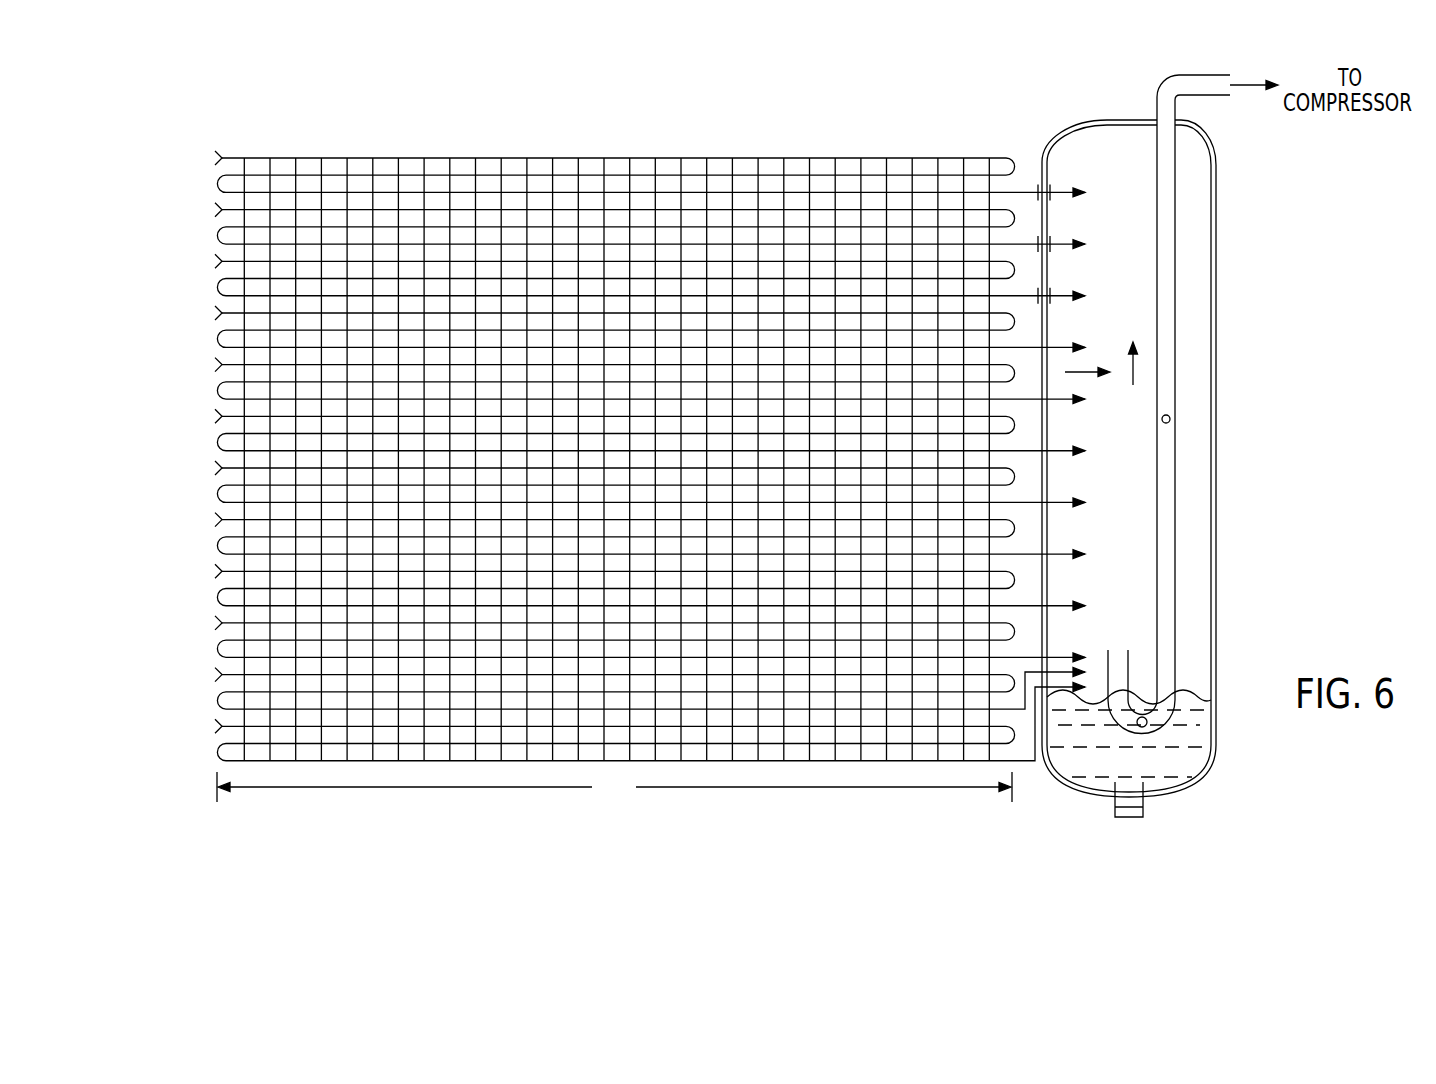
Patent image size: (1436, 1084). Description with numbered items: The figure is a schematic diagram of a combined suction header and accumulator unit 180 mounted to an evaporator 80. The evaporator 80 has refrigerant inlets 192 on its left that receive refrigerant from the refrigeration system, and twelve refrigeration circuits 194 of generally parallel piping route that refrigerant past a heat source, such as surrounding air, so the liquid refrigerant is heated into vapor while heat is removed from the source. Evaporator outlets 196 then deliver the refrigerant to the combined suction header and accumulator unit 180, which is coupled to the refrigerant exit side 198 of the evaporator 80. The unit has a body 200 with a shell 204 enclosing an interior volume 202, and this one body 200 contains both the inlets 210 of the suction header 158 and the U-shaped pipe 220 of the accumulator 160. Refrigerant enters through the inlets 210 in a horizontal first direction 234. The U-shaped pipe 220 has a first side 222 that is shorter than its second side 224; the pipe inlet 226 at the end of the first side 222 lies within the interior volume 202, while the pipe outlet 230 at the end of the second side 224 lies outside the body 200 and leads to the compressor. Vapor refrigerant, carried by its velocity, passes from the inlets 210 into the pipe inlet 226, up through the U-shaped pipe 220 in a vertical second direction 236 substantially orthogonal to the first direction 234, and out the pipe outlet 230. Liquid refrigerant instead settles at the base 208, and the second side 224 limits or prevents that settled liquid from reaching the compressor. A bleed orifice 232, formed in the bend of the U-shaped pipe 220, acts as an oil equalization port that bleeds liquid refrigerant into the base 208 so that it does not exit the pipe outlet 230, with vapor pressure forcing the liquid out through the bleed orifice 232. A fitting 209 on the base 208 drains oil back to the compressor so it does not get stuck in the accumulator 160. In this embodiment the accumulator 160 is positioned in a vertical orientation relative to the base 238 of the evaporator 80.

The evaporator 80 is at (370, 136).
The refrigerant inlets 192 is at (220, 262).
The refrigeration circuits 194 is at (257, 208).
The evaporator outlets 196 is at (1024, 188).
The refrigerant exit side 198 is at (1004, 154).
The inlets 210 is at (1050, 187).
The suction header 158 is at (1115, 235).
The interior volume 202 is at (1128, 290).
The accumulator 160 is at (1186, 269).
The body 200 is at (1213, 325).
The second direction 236 is at (1133, 368).
The first direction 234 is at (1082, 374).
The U-shaped pipe 220 is at (1165, 457).
The combined suction header and accumulator unit 180 is at (1232, 534).
The shell 204 is at (1212, 575).
The second side 224 is at (1167, 620).
The pipe inlet 226 is at (1117, 650).
The bleed orifice 232 is at (1145, 726).
The first side 222 is at (1120, 713).
The base 208 is at (1173, 793).
The fitting 209 is at (1128, 817).
The pipe outlet 230 is at (1207, 96).
The base 238 is at (614, 787).